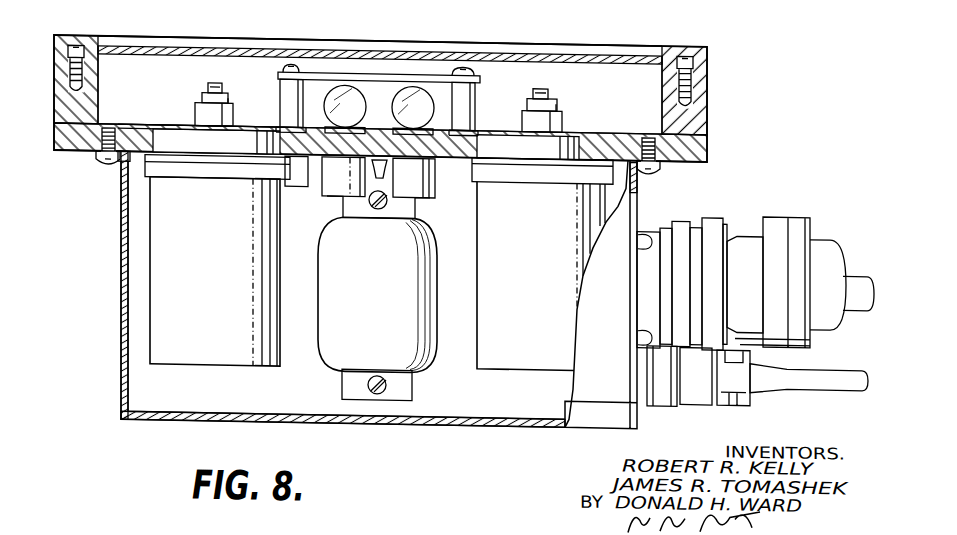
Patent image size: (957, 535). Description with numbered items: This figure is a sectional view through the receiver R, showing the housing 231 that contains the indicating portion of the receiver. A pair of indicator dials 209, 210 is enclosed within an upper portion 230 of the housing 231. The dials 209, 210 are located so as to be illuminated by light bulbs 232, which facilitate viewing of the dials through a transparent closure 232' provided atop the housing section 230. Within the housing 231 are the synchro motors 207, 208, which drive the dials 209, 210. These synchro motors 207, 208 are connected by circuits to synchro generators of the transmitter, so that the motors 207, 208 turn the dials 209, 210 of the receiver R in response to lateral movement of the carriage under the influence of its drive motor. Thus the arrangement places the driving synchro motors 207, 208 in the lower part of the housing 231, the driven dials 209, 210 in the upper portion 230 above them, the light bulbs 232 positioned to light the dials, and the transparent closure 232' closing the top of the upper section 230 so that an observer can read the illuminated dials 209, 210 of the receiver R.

The receiver R is at (723, 45).
The synchro motor 207 is at (226, 248).
The synchro motor 208 is at (542, 253).
The indicator dial 209 is at (141, 121).
The indicator dial 210 is at (604, 120).
The upper portion of housing 230 is at (696, 104).
The housing 231 is at (496, 415).
The light bulbs 232 is at (378, 73).
The transparent closure 232' is at (380, 34).